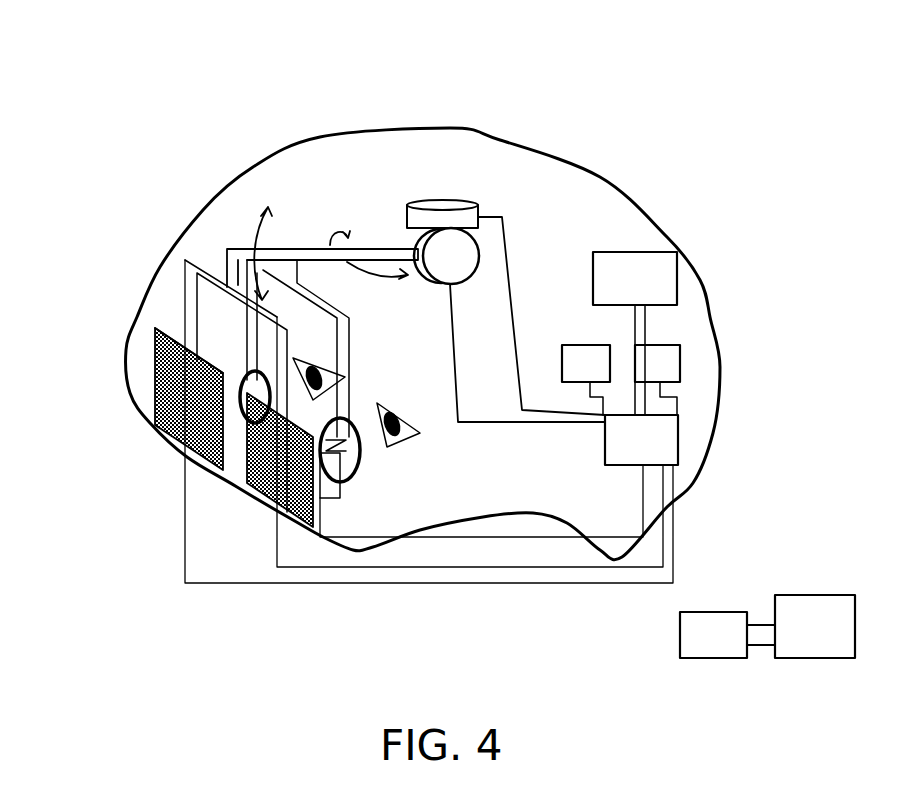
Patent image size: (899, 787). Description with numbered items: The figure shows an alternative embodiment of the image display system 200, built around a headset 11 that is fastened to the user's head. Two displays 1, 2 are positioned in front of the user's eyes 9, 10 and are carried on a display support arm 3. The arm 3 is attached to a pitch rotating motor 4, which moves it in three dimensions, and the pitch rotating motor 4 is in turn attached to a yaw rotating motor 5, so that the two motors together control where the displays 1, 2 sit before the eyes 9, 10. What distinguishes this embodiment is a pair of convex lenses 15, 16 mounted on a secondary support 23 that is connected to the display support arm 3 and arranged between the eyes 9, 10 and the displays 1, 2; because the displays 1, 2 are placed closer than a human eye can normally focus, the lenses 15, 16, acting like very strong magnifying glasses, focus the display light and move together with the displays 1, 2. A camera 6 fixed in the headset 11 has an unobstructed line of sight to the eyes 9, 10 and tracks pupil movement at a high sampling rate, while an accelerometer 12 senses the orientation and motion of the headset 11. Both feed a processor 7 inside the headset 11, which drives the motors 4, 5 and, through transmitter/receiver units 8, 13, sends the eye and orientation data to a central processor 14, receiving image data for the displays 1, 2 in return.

The system 200 is at (622, 122).
The headset 11 is at (250, 172).
The secondary support 23 is at (306, 280).
The display support arm 3 is at (237, 270).
The user's eye 9 is at (305, 362).
The lens 16 is at (157, 337).
The display 1 is at (175, 397).
The display 2 is at (260, 453).
The lens 15 is at (362, 458).
The camera 6 is at (345, 497).
The user's eye 10 is at (427, 440).
The yaw rotating motor 5 is at (427, 217).
The pitch rotating motor 4 is at (457, 253).
The transmitter/receiver unit 8 is at (627, 270).
The accelerometer 12 is at (603, 357).
The processor 7 is at (657, 433).
The transmitter/receiver unit 13 is at (683, 637).
The central processor 14 is at (773, 597).